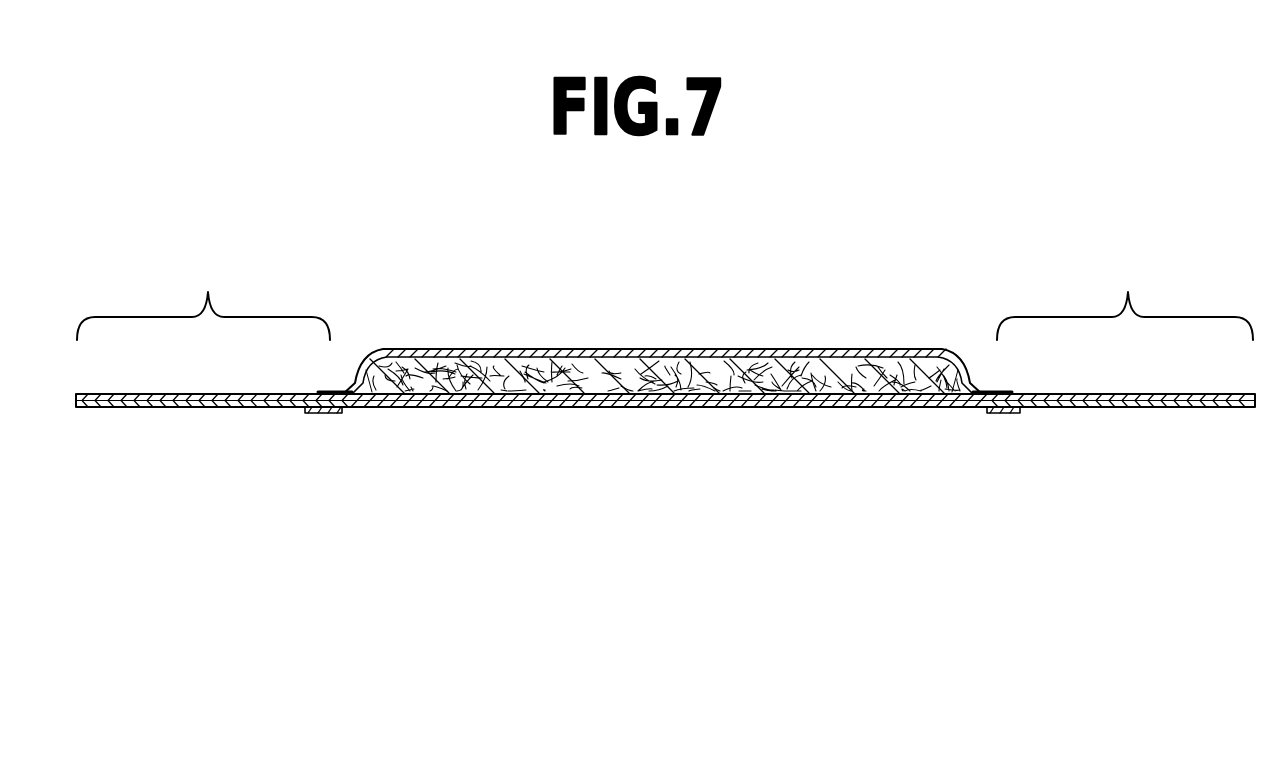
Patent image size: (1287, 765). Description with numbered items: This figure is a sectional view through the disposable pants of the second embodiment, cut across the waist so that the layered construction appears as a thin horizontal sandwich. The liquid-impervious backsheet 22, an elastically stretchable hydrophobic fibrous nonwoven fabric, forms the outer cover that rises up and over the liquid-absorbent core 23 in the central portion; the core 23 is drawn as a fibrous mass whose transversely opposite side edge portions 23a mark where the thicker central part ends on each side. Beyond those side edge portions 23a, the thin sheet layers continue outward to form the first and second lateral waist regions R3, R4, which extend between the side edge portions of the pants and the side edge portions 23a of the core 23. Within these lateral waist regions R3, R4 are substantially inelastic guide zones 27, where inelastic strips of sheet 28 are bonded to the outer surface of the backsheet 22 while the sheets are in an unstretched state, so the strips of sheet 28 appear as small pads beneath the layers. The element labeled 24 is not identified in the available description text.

The backsheet 22 is at (723, 349).
The liquid-absorbent core 23 is at (790, 390).
The side edge portion of the core 23a is at (380, 383).
The base plate 24 is at (602, 407).
The guide zone 27 is at (322, 393).
The inelastic strip of sheet 28 is at (322, 413).
The first lateral waist region R3 is at (203, 297).
The second lateral waist region R4 is at (1125, 299).